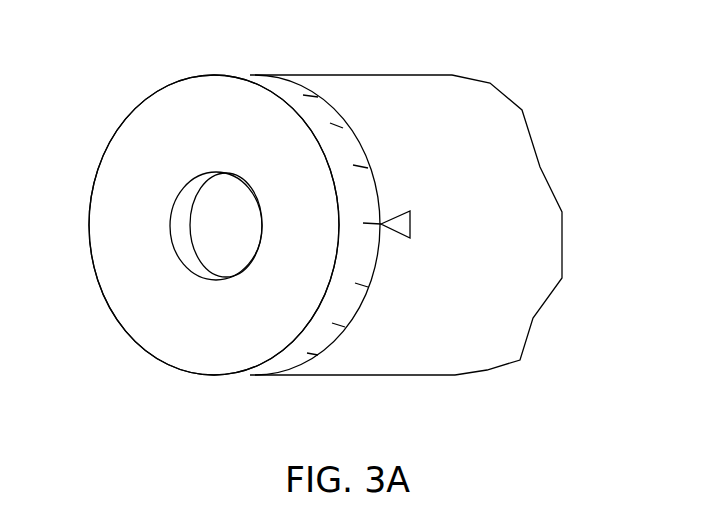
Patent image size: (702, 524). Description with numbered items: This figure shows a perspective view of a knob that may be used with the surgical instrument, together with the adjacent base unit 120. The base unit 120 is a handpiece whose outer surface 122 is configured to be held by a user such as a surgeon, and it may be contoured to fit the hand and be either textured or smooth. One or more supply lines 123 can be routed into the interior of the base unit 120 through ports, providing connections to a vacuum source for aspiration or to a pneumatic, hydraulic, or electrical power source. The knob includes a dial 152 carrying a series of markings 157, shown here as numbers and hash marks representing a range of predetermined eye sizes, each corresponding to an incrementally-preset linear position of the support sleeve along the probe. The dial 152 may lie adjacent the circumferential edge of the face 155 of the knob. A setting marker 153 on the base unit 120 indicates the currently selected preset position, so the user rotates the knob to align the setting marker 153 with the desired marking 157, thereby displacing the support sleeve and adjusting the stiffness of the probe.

The base unit 120 is at (390, 338).
The outer surface 122 is at (443, 377).
The supply lines 123 is at (213, 207).
The dial 152 is at (283, 78).
The setting marker 153 is at (412, 223).
The face 155 is at (158, 302).
The markings 157 is at (355, 125).